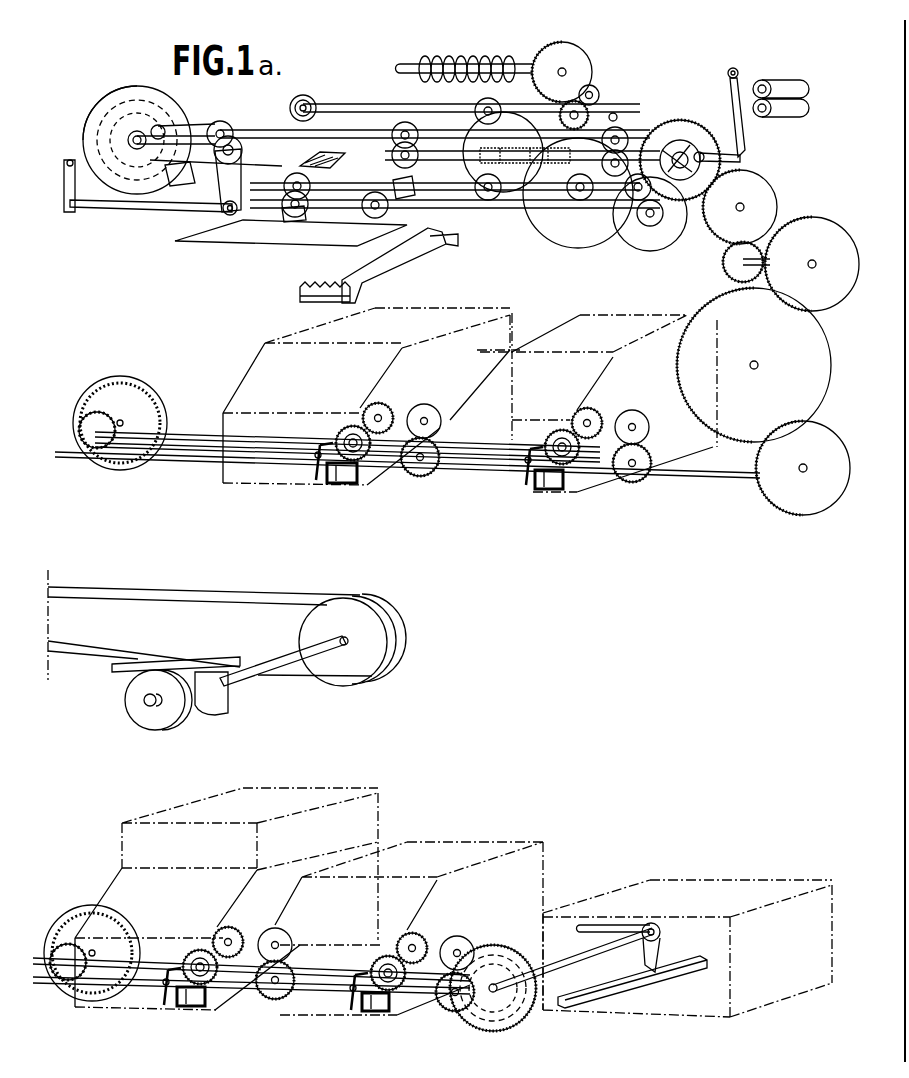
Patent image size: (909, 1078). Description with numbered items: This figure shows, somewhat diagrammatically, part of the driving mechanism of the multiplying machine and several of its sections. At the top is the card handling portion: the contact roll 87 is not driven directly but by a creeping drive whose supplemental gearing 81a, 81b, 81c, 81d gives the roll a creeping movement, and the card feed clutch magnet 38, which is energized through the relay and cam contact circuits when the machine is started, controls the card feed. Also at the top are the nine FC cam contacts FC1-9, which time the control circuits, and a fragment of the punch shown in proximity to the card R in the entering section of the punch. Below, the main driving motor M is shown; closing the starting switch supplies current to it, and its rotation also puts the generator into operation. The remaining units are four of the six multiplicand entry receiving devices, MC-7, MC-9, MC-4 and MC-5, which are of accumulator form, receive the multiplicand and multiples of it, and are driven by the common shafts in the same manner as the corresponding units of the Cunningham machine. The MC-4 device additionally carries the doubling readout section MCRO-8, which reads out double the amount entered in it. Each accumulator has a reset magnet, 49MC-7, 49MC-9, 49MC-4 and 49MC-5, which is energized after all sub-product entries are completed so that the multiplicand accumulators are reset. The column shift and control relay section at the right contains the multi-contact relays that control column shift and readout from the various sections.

The FC cam contacts FC1-9 is at (500, 62).
The contact roll 87 is at (283, 120).
The supplemental gearing 81a is at (605, 133).
The supplemental gearing 81b is at (655, 233).
The supplemental gearing 81c is at (573, 230).
The supplemental gearing 81d is at (525, 173).
The card feed clutch magnet 38 is at (785, 118).
The card R is at (291, 233).
The main driving motor M is at (207, 708).
The multiplicand entry receiving device MC-7 is at (371, 396).
The multiplicand entry receiving device MC-9 is at (598, 402).
The multiplicand entry receiving device MC-4 is at (226, 926).
The multiplicand entry receiving device MC-5 is at (464, 936).
The doubling readout section MCRO-8 is at (250, 864).
The reset magnet 49MC-7 is at (345, 482).
The reset magnet 49MC-9 is at (550, 490).
The reset magnet 49MC-4 is at (190, 1008).
The reset magnet 49MC-5 is at (373, 1012).